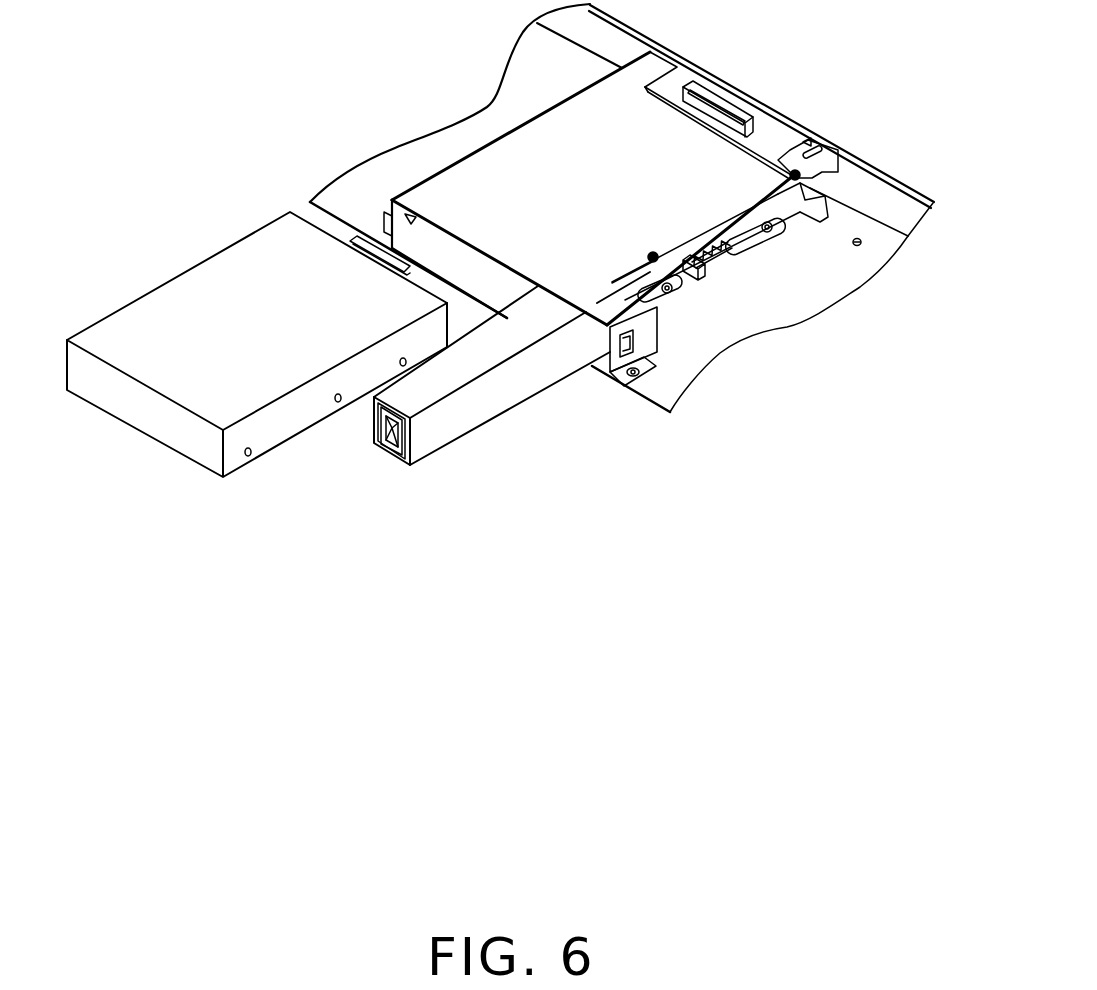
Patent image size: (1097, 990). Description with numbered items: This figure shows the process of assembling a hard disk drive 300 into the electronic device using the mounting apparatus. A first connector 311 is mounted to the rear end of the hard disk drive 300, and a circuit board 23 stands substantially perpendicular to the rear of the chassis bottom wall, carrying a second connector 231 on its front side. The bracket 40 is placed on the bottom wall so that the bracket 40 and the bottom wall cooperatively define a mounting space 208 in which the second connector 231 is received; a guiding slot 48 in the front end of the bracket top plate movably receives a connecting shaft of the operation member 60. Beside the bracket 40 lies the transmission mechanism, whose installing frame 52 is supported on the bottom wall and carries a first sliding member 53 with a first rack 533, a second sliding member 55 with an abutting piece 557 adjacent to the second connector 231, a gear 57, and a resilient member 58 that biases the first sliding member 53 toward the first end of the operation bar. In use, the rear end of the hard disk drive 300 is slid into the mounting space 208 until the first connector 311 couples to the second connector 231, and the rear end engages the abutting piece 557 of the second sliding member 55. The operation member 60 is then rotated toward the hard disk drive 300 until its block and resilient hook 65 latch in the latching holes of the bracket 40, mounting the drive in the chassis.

The circuit board 23 is at (872, 183).
The bracket 40 is at (527, 170).
The mounting space 208 is at (442, 245).
The second connector 231 is at (708, 98).
The second sliding member 55 is at (827, 160).
The abutting piece 557 is at (813, 143).
The installing frame 52 is at (802, 217).
The first sliding member 53 is at (777, 242).
The gear 57 is at (750, 245).
The resilient member 58 is at (700, 293).
The first rack 533 is at (713, 252).
The guiding slot 48 is at (621, 380).
The operation member 60 is at (510, 392).
The resilient hook 65 is at (390, 452).
The hard disk drive 300 is at (178, 427).
The first connector 311 is at (363, 252).